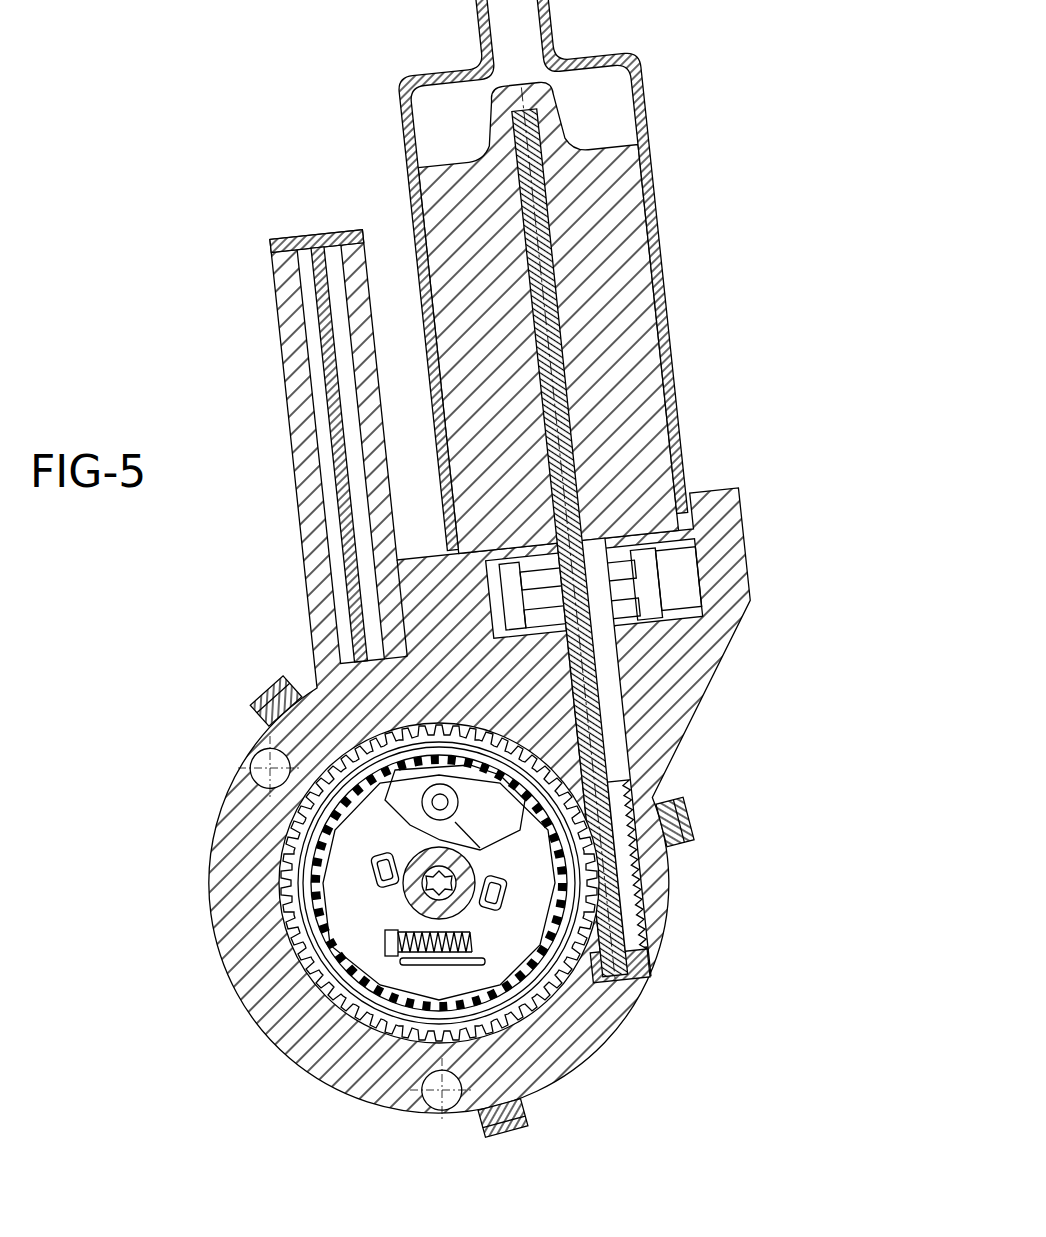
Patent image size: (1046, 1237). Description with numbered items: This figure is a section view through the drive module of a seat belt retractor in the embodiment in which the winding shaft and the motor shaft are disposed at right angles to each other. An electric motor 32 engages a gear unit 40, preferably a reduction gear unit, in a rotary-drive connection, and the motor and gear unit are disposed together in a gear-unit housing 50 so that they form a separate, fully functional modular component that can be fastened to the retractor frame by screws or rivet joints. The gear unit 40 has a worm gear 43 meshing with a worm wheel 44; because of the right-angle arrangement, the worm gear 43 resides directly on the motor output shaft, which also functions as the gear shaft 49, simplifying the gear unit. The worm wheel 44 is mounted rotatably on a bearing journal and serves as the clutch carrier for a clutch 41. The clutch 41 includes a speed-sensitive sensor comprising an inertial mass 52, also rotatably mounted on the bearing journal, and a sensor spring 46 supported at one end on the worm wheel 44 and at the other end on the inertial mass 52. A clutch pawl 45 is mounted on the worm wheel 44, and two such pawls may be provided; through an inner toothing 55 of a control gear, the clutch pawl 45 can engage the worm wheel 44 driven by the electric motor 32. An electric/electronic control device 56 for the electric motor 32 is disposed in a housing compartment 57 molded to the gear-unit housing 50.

The electric motor 32 is at (612, 305).
The gear unit 40 is at (682, 956).
The clutch 41 is at (402, 964).
The worm gear 43 is at (642, 900).
The worm wheel 44 is at (554, 988).
The clutch pawl 45 is at (385, 795).
The sensor spring 46 is at (453, 952).
The gear shaft 49 is at (600, 748).
The gear-unit housing 50 is at (290, 1020).
The inertial mass 52 is at (350, 898).
The inner toothing 55 is at (330, 845).
The electric/electronic control device 56 is at (350, 543).
The housing compartment 57 is at (290, 353).